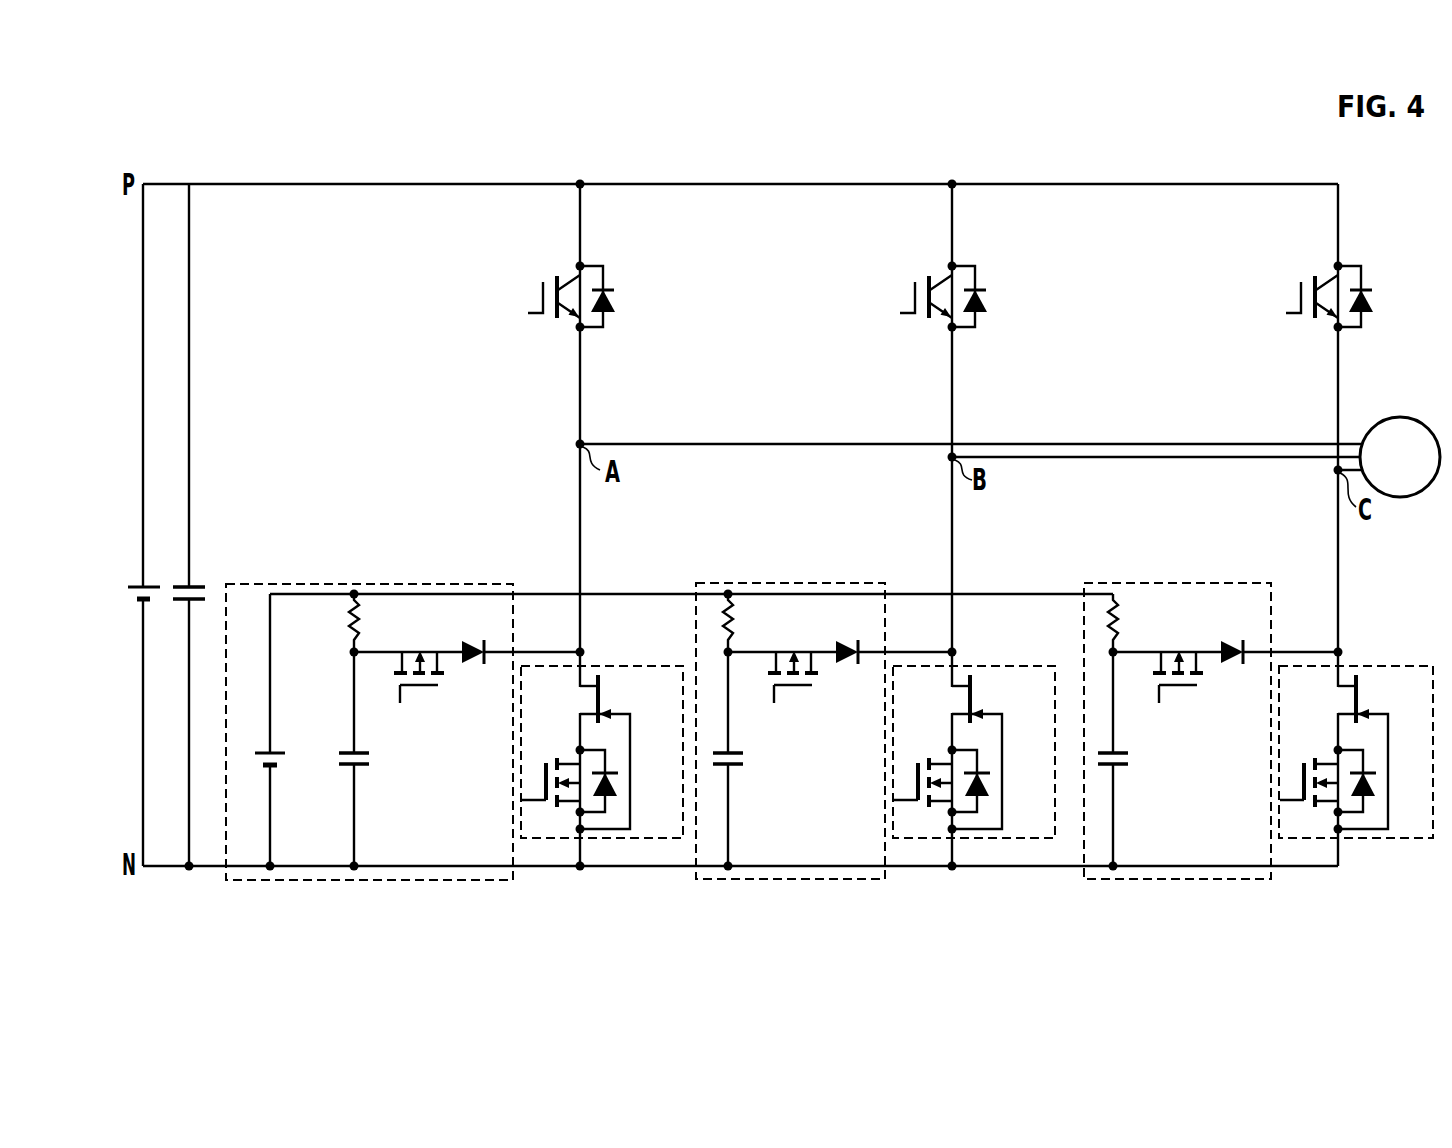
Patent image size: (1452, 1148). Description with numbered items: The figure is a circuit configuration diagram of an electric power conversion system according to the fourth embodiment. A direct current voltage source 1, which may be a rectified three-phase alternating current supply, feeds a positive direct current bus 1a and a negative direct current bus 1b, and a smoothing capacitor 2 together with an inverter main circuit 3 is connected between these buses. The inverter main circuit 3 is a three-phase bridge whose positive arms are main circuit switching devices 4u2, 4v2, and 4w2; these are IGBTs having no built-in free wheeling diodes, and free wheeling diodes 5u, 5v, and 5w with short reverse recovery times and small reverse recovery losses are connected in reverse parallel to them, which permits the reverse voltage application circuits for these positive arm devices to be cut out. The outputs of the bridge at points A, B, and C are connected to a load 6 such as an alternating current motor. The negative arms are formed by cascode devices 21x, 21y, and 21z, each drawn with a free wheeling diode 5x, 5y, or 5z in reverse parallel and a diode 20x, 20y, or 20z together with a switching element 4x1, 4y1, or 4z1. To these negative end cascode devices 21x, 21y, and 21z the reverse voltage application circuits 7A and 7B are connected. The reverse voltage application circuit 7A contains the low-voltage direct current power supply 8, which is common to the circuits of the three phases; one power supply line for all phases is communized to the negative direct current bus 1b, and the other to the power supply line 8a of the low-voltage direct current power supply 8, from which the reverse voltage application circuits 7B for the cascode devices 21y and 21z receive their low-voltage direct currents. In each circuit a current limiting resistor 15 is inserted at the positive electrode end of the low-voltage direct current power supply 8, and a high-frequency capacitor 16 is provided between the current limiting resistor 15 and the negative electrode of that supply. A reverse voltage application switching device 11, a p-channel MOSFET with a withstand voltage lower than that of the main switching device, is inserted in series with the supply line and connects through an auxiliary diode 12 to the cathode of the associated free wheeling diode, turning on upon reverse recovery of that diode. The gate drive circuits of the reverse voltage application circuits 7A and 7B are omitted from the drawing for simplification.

The direct current voltage source 1 is at (133, 585).
The positive direct current bus 1a is at (362, 183).
The negative direct current bus 1b is at (243, 868).
The smoothing capacitor 2 is at (181, 585).
The inverter main circuit 3 is at (992, 160).
The main circuit switching device 4u2 is at (552, 277).
The main circuit switching device 4v2 is at (924, 277).
The main circuit switching device 4w2 is at (1310, 277).
The free wheeling diode 5u is at (608, 282).
The free wheeling diode 5v is at (980, 283).
The free wheeling diode 5w is at (1366, 283).
The load 6 is at (1397, 417).
The reverse voltage application circuit 7A is at (386, 584).
The reverse voltage application circuit 7B is at (807, 583).
The low-voltage direct current power supply 8 is at (262, 747).
The power supply line 8a is at (303, 593).
The reverse voltage application switching device 11 is at (420, 688).
The auxiliary diode 12 is at (470, 670).
The current limiting resistor 15 is at (360, 620).
The high-frequency capacitor 16 is at (358, 767).
The diode of lower arm unit (X) 20x is at (602, 693).
The diode of lower arm unit (Y) 20y is at (972, 693).
The diode of lower arm unit (Z) 20z is at (1359, 693).
The cascode device 21x is at (628, 662).
The cascode device 21y is at (998, 662).
The cascode device 21z is at (1383, 662).
The lower arm MOSFET switching element (X) 4x1 is at (548, 757).
The lower arm MOSFET switching element (Y) 4y1 is at (920, 757).
The lower arm MOSFET switching element (Z) 4z1 is at (1307, 757).
The free wheeling diode 5x is at (610, 773).
The free wheeling diode 5y is at (980, 773).
The free wheeling diode 5z is at (1365, 773).